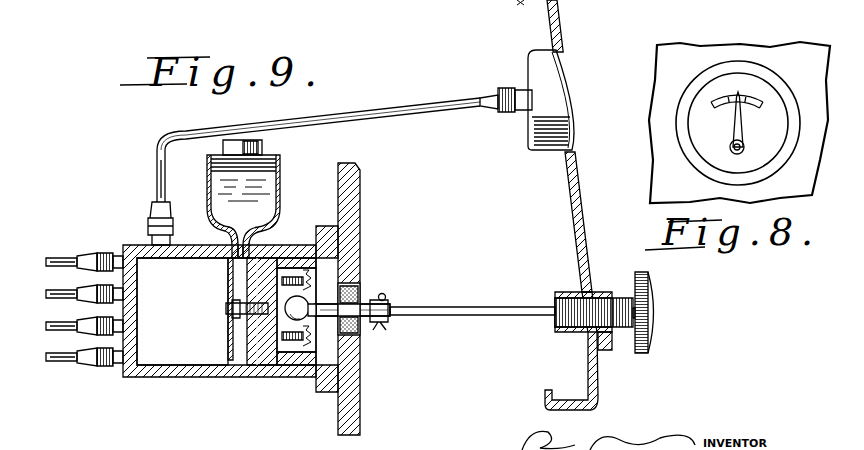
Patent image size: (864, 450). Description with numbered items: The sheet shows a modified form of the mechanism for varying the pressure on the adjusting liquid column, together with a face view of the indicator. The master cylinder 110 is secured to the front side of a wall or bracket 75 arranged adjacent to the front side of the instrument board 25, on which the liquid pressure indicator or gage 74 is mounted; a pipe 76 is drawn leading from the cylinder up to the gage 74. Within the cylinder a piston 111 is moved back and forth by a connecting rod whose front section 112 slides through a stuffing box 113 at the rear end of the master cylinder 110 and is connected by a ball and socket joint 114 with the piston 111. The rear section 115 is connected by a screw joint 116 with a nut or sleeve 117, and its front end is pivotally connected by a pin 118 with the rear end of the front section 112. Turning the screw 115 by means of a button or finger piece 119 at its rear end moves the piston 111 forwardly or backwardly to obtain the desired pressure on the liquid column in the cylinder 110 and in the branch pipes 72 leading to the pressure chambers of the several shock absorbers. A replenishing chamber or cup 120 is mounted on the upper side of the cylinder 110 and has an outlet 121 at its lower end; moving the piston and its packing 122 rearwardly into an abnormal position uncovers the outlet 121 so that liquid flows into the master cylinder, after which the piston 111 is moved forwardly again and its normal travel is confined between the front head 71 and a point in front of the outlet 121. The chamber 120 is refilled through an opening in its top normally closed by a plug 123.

In FIG. 8, the instrument board 25 is at (812, 81).
In FIG. 9, the head 71 is at (138, 342).
In FIG. 9, the conduit 72 is at (45, 268).
In FIG. 9, the liquid pressure indicator or gage 74 is at (543, 70).
In FIG. 8, the liquid pressure indicator or gage 74 is at (772, 132).
In FIG. 9, the wall or bracket 75 is at (574, 202).
In FIG. 9, the pipe 76 is at (385, 114).
In FIG. 9, the master cylinder 110 is at (177, 373).
In FIG. 9, the piston 111 is at (258, 367).
In FIG. 9, the front section 112 is at (361, 306).
In FIG. 9, the stuffing box 113 is at (356, 336).
In FIG. 9, the ball and socket joint 114 is at (312, 368).
In FIG. 9, the rear section 115 is at (455, 318).
In FIG. 9, the screw joint 116 is at (573, 333).
In FIG. 9, the nut or sleeve 117 is at (603, 345).
In FIG. 9, the pin 118 is at (386, 302).
In FIG. 9, the button or finger piece 119 is at (653, 333).
In FIG. 9, the replenishing chamber or cup 120 is at (265, 193).
In FIG. 9, the outlet 121 is at (244, 249).
In FIG. 9, the packing 122 is at (240, 375).
In FIG. 9, the plug 123 is at (268, 151).